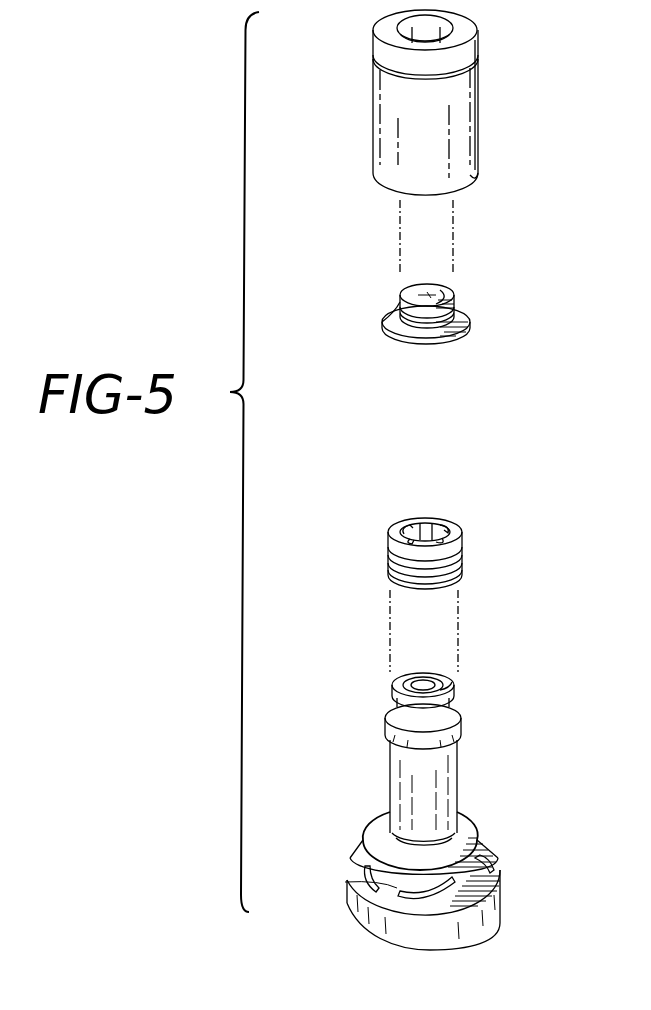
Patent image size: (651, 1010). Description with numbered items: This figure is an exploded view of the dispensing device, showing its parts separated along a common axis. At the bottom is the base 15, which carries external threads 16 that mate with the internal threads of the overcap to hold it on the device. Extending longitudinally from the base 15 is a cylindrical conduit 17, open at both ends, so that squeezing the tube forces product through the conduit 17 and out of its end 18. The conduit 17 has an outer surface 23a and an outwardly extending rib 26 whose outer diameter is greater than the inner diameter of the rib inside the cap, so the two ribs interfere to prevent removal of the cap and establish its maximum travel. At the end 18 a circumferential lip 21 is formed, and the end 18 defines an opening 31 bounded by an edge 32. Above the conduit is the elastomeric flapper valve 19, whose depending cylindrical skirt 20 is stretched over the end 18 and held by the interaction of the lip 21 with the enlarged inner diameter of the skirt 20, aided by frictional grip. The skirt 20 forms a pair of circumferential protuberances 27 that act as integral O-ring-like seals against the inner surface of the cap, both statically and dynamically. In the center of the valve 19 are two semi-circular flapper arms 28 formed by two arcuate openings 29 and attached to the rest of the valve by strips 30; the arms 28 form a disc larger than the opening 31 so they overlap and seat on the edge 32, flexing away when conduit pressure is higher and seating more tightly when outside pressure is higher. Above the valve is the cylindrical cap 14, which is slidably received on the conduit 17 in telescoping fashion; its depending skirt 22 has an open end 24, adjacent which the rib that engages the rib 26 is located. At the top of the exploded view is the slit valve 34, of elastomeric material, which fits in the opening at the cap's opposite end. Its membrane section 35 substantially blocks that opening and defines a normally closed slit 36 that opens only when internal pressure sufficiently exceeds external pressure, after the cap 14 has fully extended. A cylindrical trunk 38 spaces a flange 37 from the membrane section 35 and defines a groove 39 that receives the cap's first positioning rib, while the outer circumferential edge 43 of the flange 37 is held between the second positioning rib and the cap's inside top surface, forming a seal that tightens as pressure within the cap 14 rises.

The cap 14 is at (388, 110).
The depending skirt 22 is at (478, 70).
The open end 24 is at (470, 180).
The slit valve 34 is at (429, 306).
The membrane section 35 is at (426, 290).
The slit 36 is at (440, 292).
The flange 37 is at (397, 318).
The cylindrical trunk 38 is at (455, 305).
The groove 39 is at (400, 300).
The outer circumferential edge 43 is at (428, 344).
The flapper valve 19 is at (435, 535).
The depending cylindrical skirt 20 is at (390, 552).
The circumferential protuberances 27 is at (465, 545).
The flapper arms 28 is at (402, 533).
The arcuate openings 29 is at (410, 526).
The strips 30 is at (426, 524).
The base 15 is at (434, 783).
The external threads 16 is at (398, 888).
The cylindrical conduit 17 is at (458, 775).
The end 18 is at (440, 680).
The circumferential lip 21 is at (455, 690).
The outwardly extending rib 26 is at (385, 722).
The opening 31 is at (423, 680).
The edge 32 is at (400, 678).
The outer surface 23a is at (390, 780).